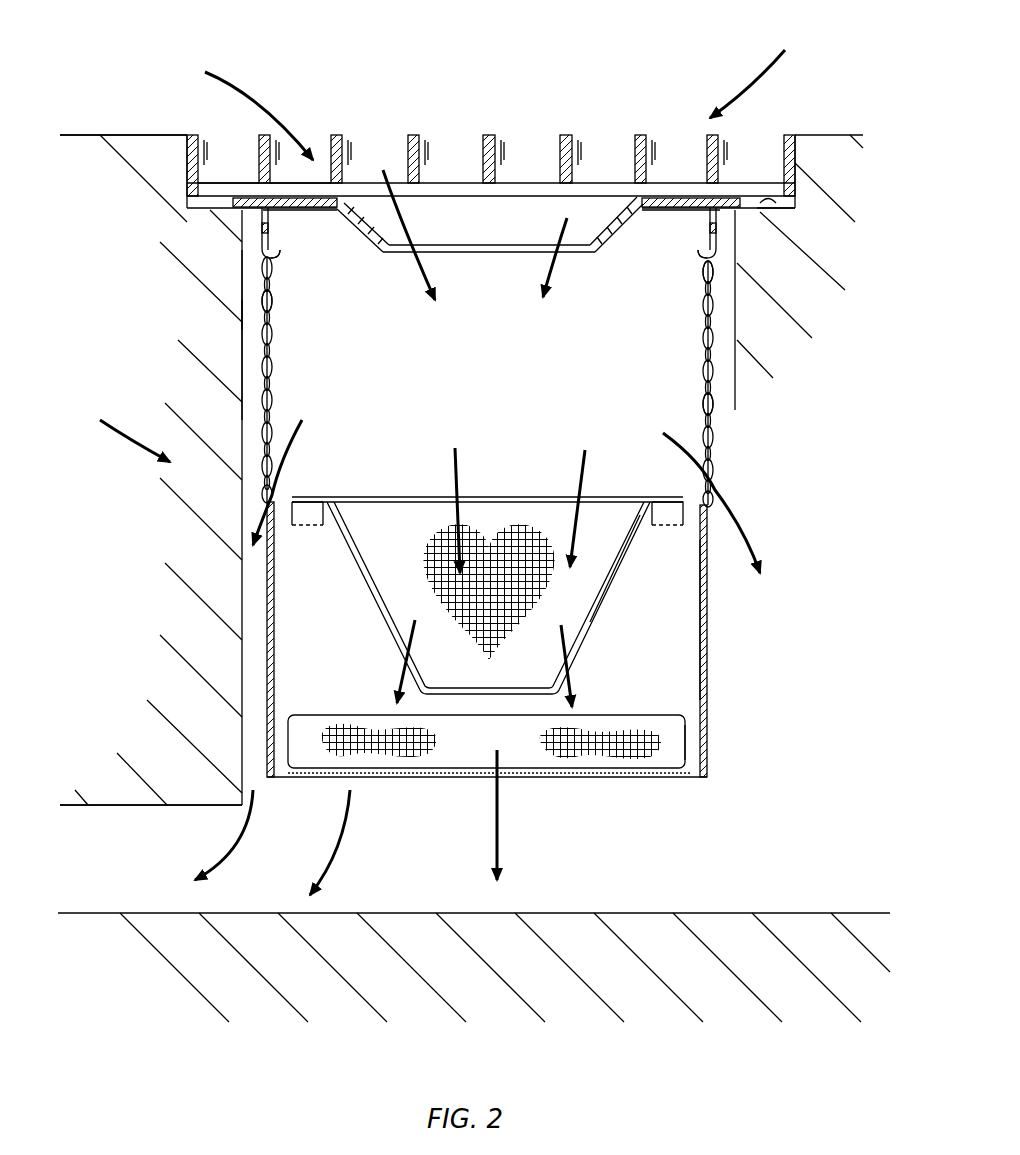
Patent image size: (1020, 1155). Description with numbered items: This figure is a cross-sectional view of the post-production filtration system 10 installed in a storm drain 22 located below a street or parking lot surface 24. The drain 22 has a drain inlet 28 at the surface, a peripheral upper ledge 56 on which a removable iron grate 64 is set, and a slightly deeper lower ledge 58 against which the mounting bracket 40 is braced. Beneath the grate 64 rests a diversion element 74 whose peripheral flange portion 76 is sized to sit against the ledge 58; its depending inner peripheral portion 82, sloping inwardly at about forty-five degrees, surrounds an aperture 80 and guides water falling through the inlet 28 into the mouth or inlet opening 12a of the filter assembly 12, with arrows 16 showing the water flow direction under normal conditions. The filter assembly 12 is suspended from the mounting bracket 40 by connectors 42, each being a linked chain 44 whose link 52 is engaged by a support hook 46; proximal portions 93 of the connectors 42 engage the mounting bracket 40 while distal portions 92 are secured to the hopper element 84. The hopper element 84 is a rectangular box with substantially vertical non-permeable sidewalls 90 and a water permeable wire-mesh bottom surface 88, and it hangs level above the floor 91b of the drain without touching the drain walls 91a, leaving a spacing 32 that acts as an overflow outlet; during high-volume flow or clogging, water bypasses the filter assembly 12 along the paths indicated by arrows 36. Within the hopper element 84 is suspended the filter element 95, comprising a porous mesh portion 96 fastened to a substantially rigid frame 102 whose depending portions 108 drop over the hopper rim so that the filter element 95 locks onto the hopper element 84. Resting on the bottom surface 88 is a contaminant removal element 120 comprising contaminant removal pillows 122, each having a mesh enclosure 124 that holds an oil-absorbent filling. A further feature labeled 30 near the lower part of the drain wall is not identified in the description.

The post-production filtration system 10 is at (116, 427).
The filter assembly 12 is at (562, 645).
The inlet opening 12a is at (523, 523).
The water flow direction arrows 16 is at (277, 107).
The storm drain 22 is at (232, 625).
The street or parking lot surface 24 is at (153, 133).
The drain inlet 28 is at (486, 171).
The outlet 30 is at (147, 830).
The spacing 32 is at (245, 388).
The bypass flow direction arrows 36 is at (303, 423).
The mounting bracket 40 is at (277, 228).
The connector 42 is at (283, 402).
The linked chain 44 is at (702, 414).
The support hook 46 is at (272, 262).
The link 52 is at (705, 273).
The upper ledge 56 is at (489, 172).
The lower ledge 58 is at (757, 208).
The iron grate 64 is at (349, 156).
The peripheral flange portion 76 is at (247, 196).
The diversion element 74 is at (602, 222).
The aperture 80 is at (508, 252).
The depending inner peripheral portion 82 is at (375, 235).
The hopper element 84 is at (710, 717).
The water permeable bottom surface 88 is at (657, 777).
The sidewalls 90 is at (700, 675).
The drain walls 91a is at (247, 295).
The floor 91b is at (635, 913).
The distal portion 92 is at (275, 500).
The proximal portions 93 is at (276, 292).
The filter element 95 is at (592, 622).
The porous portion 96 is at (527, 574).
The rigid frame 102 is at (303, 498).
The depending portions 108 is at (653, 520).
The contaminant removal element 120 is at (562, 745).
The contaminant removal pillow 122 is at (687, 743).
The mesh enclosure 124 is at (553, 745).